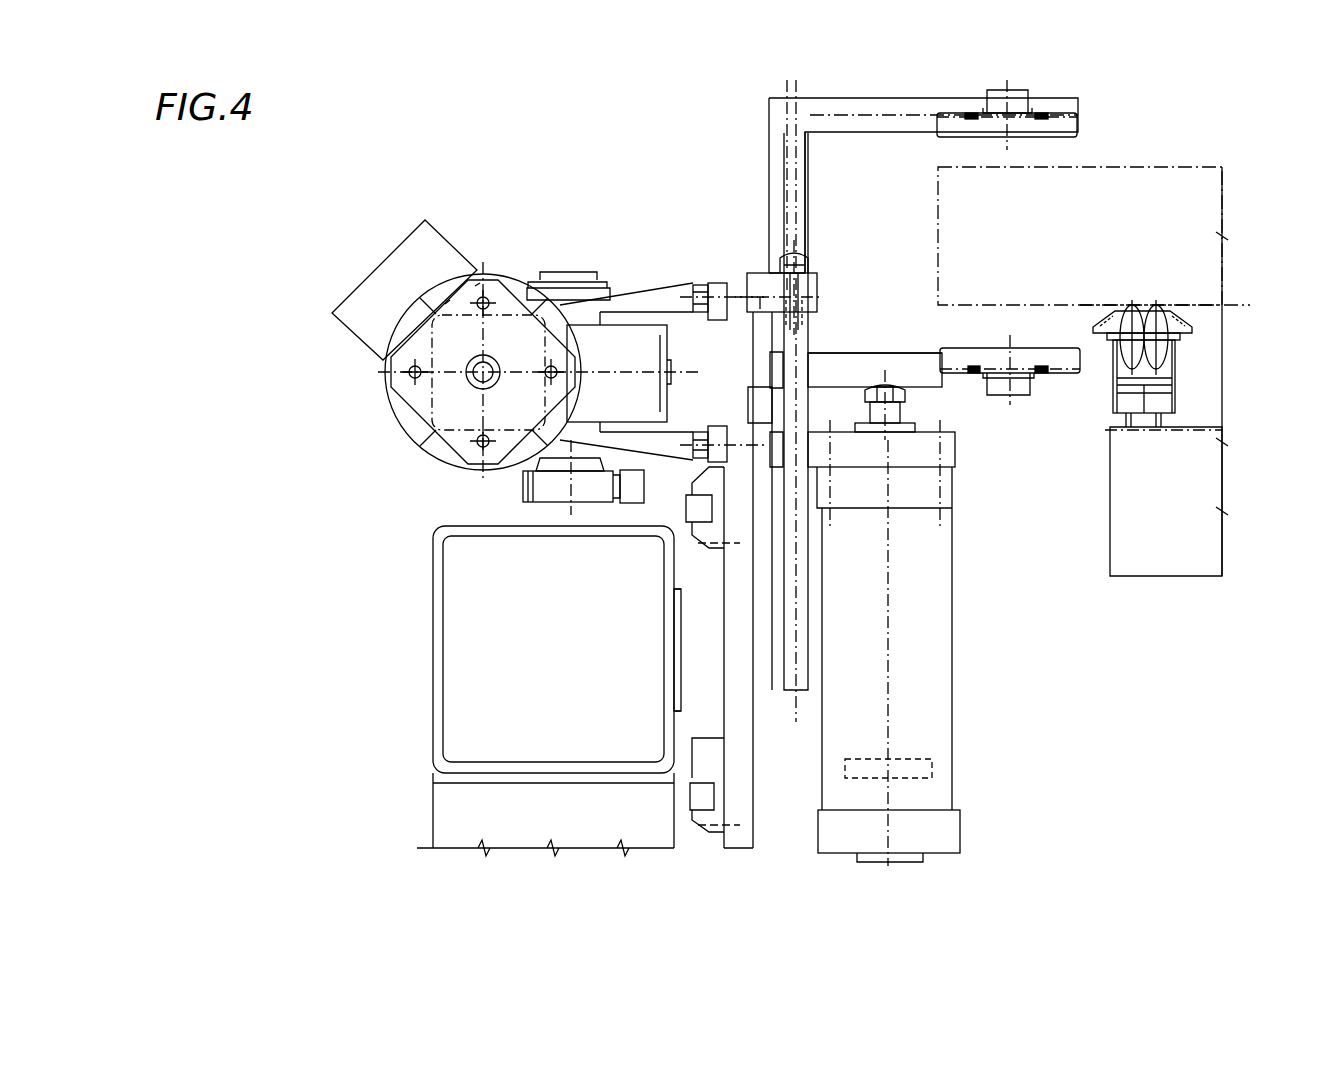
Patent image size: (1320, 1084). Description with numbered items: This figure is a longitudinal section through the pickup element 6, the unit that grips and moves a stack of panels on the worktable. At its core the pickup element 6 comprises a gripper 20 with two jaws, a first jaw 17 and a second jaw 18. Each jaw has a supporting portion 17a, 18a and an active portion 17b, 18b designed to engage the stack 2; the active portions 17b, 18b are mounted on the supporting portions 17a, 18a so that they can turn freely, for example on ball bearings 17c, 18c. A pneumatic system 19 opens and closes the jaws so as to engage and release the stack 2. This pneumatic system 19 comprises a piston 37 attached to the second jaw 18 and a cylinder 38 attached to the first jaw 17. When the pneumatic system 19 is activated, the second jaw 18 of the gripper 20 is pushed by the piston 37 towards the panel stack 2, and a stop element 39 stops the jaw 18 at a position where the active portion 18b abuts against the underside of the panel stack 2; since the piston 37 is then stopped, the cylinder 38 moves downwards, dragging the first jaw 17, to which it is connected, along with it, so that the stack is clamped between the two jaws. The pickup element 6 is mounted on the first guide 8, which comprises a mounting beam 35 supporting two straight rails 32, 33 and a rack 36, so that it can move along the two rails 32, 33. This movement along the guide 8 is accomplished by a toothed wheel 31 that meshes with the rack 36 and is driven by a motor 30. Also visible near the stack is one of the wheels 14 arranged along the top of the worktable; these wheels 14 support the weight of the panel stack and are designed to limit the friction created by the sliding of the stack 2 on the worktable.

The panel stack 2 is at (1158, 183).
The pickup element 6 is at (372, 440).
The first guide 8 is at (458, 689).
The wheels 14 is at (1168, 314).
The first jaw 17 is at (851, 88).
The supporting portion 17a is at (832, 115).
The active portion 17b is at (1055, 125).
The ball bearings 17c is at (970, 112).
The second jaw 18 is at (823, 347).
The supporting portion 18a is at (862, 353).
The active portion 18b is at (972, 352).
The ball bearings 18c is at (1040, 373).
The pneumatic system 19 is at (918, 411).
The gripper 20 is at (752, 172).
The motor 30 is at (443, 300).
The toothed wheel 31 is at (553, 483).
The rail 32 is at (698, 521).
The rail 33 is at (697, 797).
The mounting beam 35 is at (437, 610).
The rack 36 is at (647, 512).
The piston 37 is at (883, 404).
The cylinder 38 is at (930, 560).
The stop element 39 is at (818, 285).